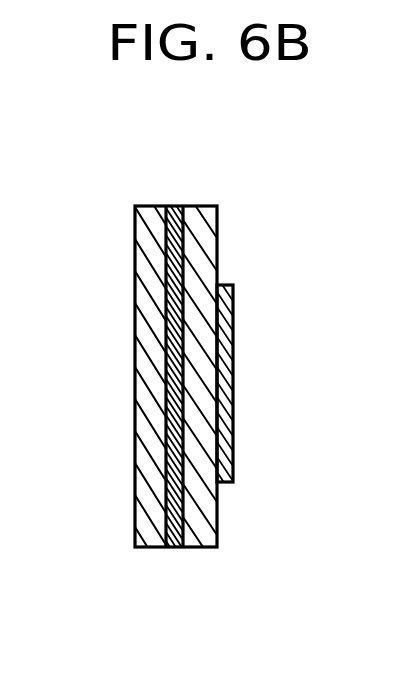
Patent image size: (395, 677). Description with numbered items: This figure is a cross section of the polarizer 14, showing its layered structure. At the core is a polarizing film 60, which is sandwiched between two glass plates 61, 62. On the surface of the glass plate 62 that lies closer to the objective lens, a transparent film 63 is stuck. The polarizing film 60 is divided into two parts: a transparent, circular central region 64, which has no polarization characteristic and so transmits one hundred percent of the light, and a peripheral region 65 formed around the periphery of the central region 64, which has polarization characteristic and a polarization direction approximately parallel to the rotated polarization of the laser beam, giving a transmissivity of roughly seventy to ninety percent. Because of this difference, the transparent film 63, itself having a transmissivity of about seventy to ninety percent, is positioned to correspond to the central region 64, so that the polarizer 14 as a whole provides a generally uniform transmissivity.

The polarizing film 60 is at (176, 203).
The glass plate 61 is at (180, 357).
The glass plate 62 is at (200, 520).
The transparent film 63 is at (228, 448).
The central region 64 is at (168, 325).
The peripheral region 65 is at (150, 303).
The polarizer 14 is at (203, 665).